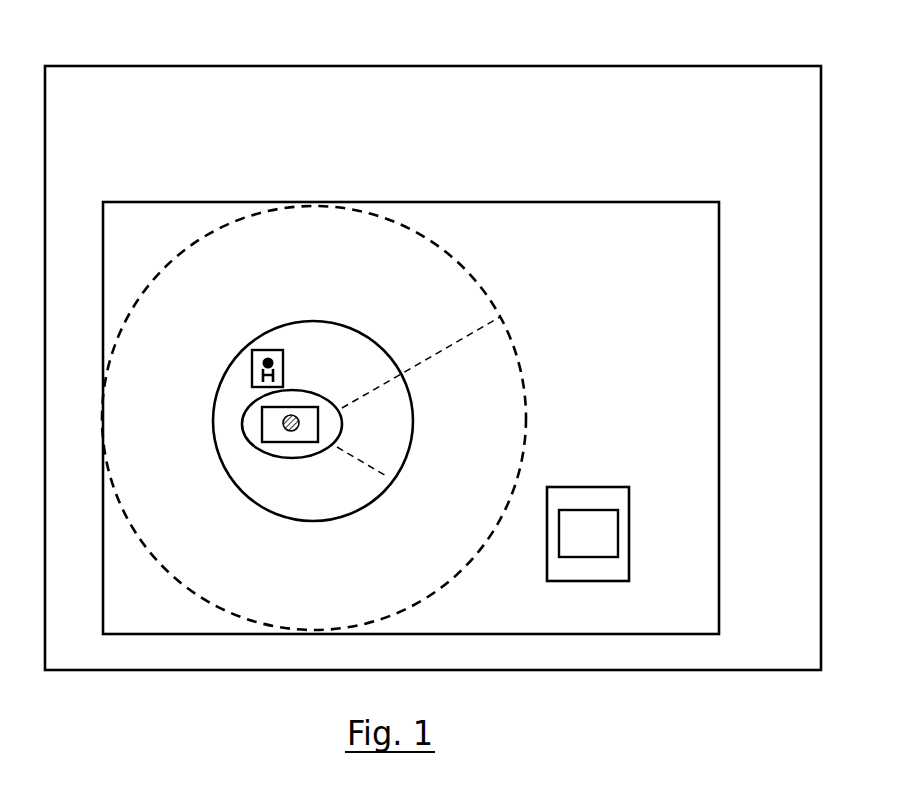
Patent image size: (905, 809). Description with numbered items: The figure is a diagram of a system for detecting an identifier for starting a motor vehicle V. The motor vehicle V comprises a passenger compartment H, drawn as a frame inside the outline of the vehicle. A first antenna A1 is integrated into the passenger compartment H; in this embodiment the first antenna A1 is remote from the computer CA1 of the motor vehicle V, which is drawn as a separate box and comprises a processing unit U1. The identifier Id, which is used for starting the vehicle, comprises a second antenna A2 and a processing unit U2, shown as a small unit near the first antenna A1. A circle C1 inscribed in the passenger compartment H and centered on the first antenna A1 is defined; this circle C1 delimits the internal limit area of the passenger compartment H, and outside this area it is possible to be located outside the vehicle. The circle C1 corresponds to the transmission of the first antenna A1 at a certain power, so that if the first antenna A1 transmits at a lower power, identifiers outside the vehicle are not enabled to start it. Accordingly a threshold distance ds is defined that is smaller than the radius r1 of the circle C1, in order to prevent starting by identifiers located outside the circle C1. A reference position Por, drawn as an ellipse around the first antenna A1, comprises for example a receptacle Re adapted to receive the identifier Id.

The motor vehicle V is at (481, 66).
The passenger compartment H is at (443, 202).
The circle C1 is at (522, 372).
The radius r1 is at (421, 362).
The threshold distance ds is at (362, 467).
The processing unit of the identifier U2 is at (256, 350).
The second antenna A2 is at (271, 358).
The identifier Id is at (283, 365).
The reference position Por is at (302, 392).
The first antenna A1 is at (298, 422).
The receptacle Re is at (290, 442).
The computer CA1 is at (630, 532).
The processing unit U1 is at (584, 532).